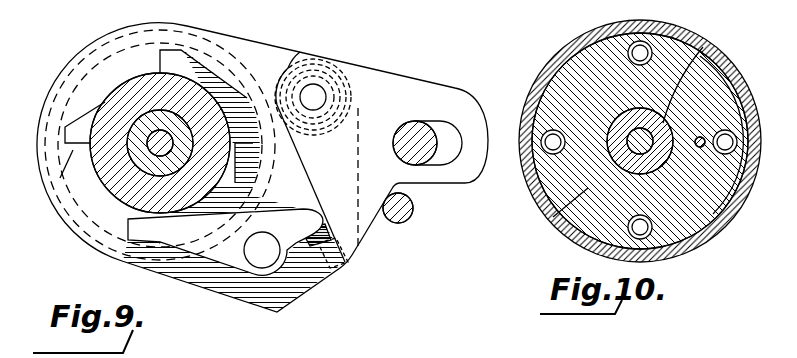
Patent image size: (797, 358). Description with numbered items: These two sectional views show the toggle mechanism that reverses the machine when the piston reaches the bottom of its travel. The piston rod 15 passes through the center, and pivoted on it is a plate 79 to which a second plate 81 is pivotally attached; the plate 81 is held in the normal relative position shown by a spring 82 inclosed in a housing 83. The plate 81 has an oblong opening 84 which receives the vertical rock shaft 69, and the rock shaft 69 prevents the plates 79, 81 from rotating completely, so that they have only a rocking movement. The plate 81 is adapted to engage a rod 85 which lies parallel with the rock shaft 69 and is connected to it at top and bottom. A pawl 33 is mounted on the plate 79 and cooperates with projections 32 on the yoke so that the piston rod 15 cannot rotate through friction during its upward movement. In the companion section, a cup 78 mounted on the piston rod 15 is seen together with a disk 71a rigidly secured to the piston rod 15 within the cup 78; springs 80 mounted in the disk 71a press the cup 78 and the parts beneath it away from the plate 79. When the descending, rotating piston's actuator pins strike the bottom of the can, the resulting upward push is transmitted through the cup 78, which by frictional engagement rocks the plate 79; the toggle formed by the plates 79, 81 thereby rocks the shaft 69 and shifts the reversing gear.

In FIG. 9, the piston rod 15 is at (146, 128).
In FIG. 10, the piston rod 15 is at (703, 47).
In FIG. 9, the projections 32 is at (73, 150).
In FIG. 9, the pawl 33 is at (232, 248).
In FIG. 9, the rock shaft 69 is at (418, 122).
In FIG. 10, the disk 71a is at (553, 217).
In FIG. 9, the cup 78 is at (110, 242).
In FIG. 10, the cup 78 is at (546, 72).
In FIG. 9, the plate 79 is at (72, 232).
In FIG. 10, the springs 80 is at (733, 205).
In FIG. 9, the plate 81 is at (262, 167).
In FIG. 9, the spring 82 is at (335, 87).
In FIG. 9, the housing 83 is at (298, 58).
In FIG. 9, the oblong opening 84 is at (445, 160).
In FIG. 9, the rod 85 is at (405, 220).